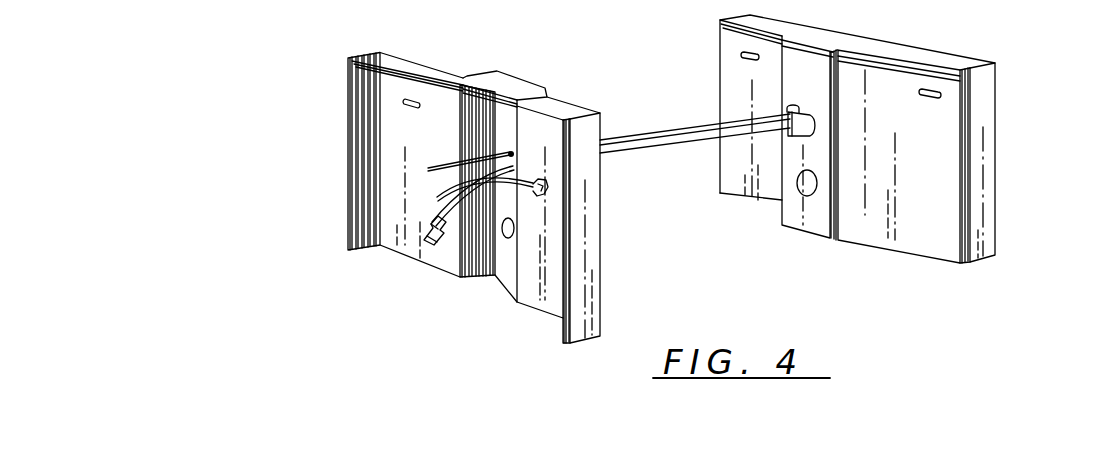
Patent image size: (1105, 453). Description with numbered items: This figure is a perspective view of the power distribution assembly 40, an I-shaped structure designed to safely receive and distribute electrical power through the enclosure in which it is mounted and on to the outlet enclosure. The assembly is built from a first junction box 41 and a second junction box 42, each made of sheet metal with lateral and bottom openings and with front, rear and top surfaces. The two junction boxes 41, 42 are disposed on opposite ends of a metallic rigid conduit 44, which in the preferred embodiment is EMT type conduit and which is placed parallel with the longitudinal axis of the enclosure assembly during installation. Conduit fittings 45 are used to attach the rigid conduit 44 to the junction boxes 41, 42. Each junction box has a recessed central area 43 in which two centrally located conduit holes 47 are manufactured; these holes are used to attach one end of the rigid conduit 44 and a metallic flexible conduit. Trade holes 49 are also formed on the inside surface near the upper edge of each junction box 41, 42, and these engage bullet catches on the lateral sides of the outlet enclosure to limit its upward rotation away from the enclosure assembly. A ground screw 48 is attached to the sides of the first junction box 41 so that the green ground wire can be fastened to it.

The power distribution assembly 40 is at (338, 34).
The first junction box 41 is at (348, 224).
The second junction box 42 is at (918, 48).
The recessed central area 43 is at (494, 135).
The rigid conduit 44 is at (660, 134).
The conduit fittings 45 is at (786, 116).
The conduit holes 47 is at (503, 240).
The ground screw 48 is at (427, 242).
The trade holes 49 is at (405, 99).